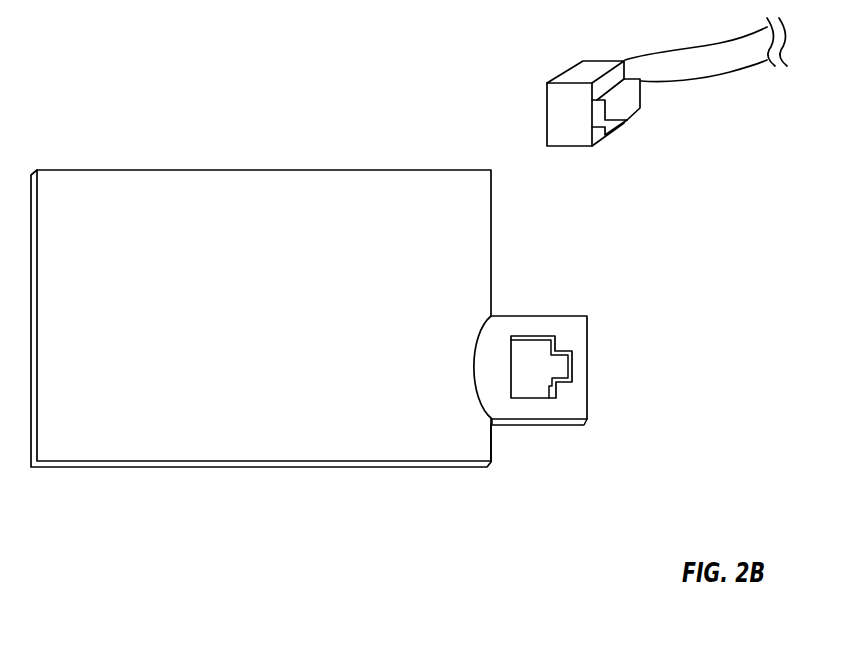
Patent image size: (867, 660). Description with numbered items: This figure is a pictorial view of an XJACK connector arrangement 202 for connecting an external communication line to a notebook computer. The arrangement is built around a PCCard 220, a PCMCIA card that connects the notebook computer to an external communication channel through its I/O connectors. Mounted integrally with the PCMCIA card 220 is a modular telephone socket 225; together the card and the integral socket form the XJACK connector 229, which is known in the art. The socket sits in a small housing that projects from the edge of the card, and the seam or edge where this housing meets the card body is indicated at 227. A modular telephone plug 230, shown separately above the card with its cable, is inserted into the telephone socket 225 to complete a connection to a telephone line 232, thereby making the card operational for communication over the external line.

The network interface card assembly 202 is at (170, 86).
The PCCard 220 is at (261, 299).
The RJ-11 telephone socket 225 is at (578, 364).
The edge of card / connector seam 227 is at (528, 441).
The XJACK connector 229 is at (543, 350).
The RJ-11 telephone plug 230 is at (610, 117).
The telephone line 232 is at (706, 47).